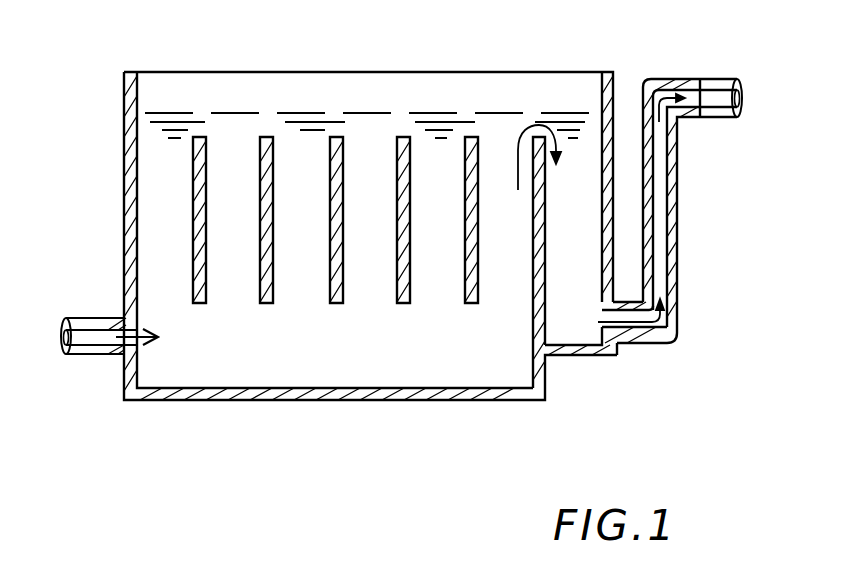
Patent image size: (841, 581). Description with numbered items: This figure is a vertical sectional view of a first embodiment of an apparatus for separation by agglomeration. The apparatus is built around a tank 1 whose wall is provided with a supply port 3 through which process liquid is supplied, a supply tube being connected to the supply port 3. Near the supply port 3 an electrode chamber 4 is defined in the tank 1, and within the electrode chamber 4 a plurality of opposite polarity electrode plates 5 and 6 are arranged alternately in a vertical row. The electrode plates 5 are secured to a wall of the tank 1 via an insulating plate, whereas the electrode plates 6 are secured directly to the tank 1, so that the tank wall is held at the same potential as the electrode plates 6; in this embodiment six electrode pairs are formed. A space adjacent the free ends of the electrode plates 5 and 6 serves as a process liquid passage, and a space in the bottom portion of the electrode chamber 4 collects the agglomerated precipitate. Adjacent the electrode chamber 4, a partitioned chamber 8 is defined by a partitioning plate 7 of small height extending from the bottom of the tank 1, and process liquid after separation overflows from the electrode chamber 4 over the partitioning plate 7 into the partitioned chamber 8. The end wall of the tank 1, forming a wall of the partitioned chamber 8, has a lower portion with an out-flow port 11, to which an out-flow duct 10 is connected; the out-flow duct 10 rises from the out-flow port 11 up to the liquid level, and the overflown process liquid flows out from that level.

The tank 1 is at (126, 167).
The supply port 3 is at (136, 332).
The electrode chamber 4 is at (365, 148).
The electrode plates 5 is at (194, 181).
The electrode plates 6 is at (261, 181).
The partitioning plate 7 is at (535, 181).
The partitioned chamber 8 is at (586, 162).
The out-flow duct 10 is at (678, 222).
The out-flow port 11 is at (597, 323).